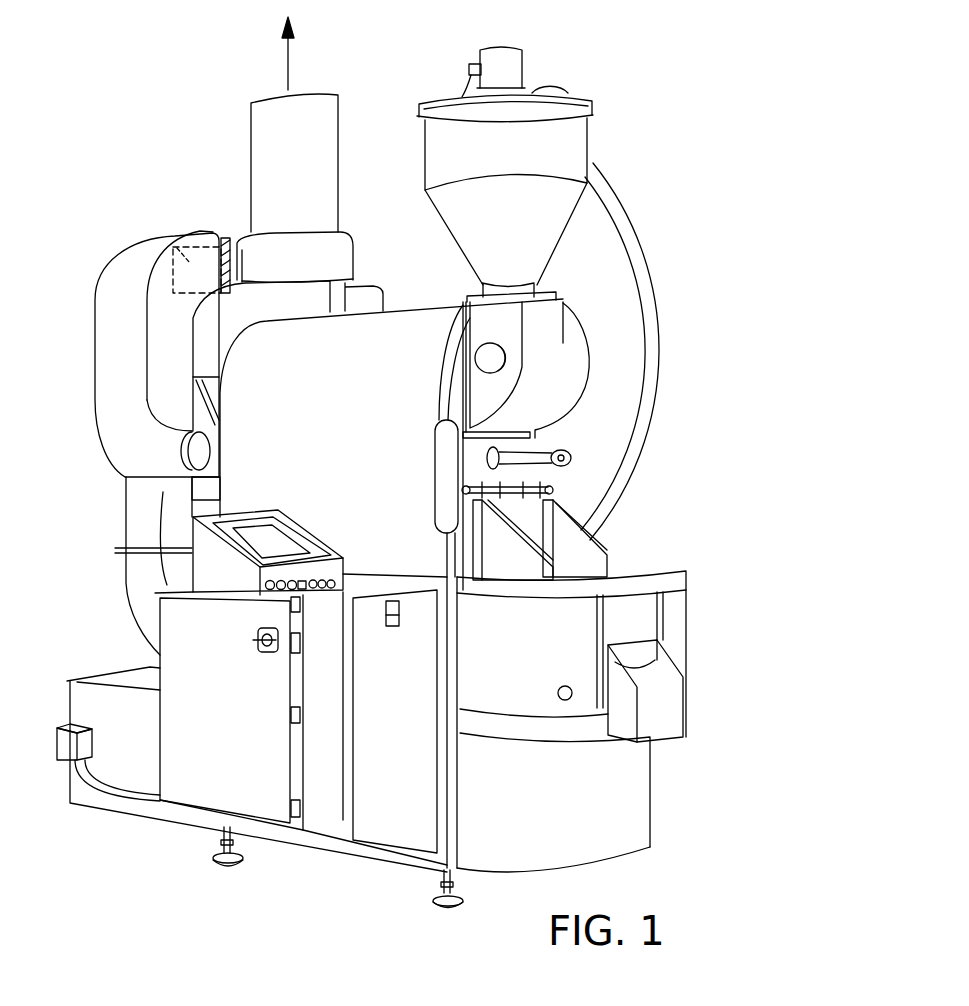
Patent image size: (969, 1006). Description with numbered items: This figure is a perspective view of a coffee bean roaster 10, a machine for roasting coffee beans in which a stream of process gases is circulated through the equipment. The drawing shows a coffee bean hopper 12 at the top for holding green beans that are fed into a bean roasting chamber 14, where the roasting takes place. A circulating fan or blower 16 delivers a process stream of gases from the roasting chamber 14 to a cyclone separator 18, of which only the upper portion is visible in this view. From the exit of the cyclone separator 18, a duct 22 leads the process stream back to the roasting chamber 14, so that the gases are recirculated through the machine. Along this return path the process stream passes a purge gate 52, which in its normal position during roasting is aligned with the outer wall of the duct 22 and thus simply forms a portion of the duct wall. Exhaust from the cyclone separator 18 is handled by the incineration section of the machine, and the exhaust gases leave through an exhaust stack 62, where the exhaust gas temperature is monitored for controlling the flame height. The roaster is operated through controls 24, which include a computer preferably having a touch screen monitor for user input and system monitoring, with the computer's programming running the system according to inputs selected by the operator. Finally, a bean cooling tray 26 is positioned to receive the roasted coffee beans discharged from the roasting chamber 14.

The coffee bean roaster 10 is at (681, 269).
The coffee bean hopper 12 is at (573, 137).
The bean roasting chamber 14 is at (270, 407).
The circulating fan or blower 16 is at (228, 332).
The cyclone separator 18 is at (365, 291).
The duct 22 is at (128, 268).
The controls 24 is at (220, 567).
The bean cooling tray 26 is at (647, 566).
The purge gate 52 is at (176, 240).
The exhaust stack 62 is at (258, 135).